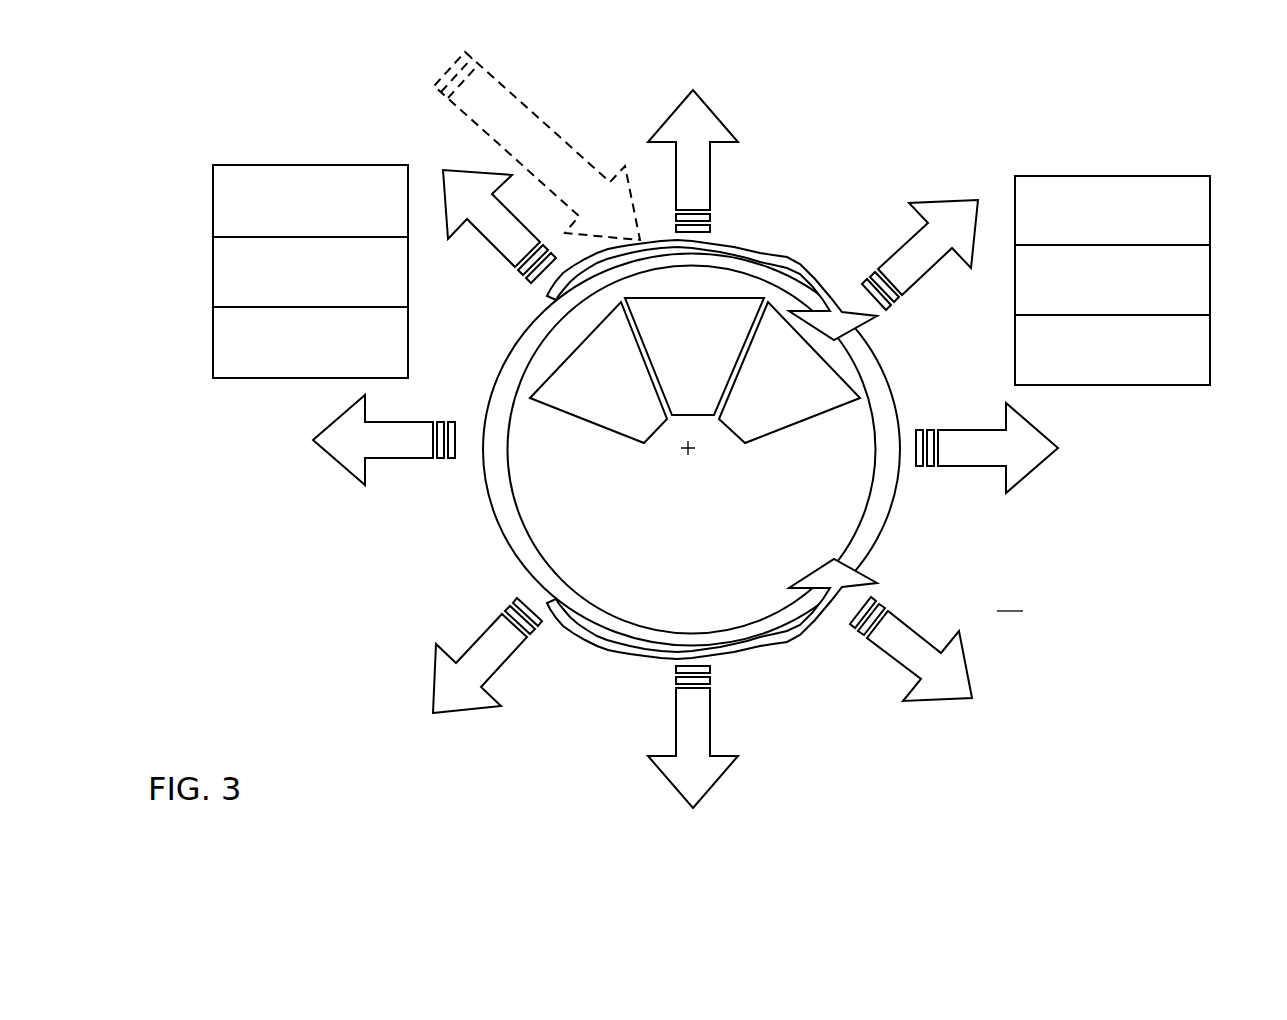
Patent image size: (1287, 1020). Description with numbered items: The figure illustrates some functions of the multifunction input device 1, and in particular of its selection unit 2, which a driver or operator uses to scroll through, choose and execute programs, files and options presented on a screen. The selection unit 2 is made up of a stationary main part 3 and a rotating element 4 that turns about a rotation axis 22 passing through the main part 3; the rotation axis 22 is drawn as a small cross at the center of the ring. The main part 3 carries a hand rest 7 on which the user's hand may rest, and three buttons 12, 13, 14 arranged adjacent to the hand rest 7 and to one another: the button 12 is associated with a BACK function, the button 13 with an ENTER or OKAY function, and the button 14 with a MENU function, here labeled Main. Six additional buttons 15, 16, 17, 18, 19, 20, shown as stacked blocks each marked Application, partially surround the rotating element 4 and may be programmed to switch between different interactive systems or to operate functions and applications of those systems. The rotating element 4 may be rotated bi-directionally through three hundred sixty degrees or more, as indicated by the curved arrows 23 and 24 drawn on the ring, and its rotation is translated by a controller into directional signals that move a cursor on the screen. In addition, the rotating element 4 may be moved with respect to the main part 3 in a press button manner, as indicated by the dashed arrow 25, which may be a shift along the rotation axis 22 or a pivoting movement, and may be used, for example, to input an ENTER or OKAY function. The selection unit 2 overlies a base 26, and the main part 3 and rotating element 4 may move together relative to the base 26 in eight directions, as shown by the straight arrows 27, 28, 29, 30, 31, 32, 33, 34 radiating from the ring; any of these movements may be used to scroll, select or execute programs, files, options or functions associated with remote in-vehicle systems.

The multifunction input device 1 is at (350, 622).
The selection unit 2 is at (424, 527).
The main part 3 is at (868, 430).
The rotating element 4 is at (893, 533).
The hand rest 7 is at (553, 548).
The button 12 is at (600, 414).
The button 13 is at (655, 420).
The button 14 is at (790, 420).
The additional button 15 is at (213, 186).
The additional button 16 is at (213, 256).
The additional button 17 is at (213, 326).
The additional button 18 is at (1210, 328).
The additional button 19 is at (1210, 258).
The additional button 20 is at (1210, 188).
The rotation axis 22 is at (706, 462).
The arrow 23 is at (815, 268).
The arrow 24 is at (802, 632).
The arrow 25 is at (538, 120).
The base 26 is at (1010, 599).
The arrow 27 is at (706, 118).
The arrow 28 is at (940, 208).
The arrow 29 is at (1030, 462).
The arrow 30 is at (962, 650).
The arrow 31 is at (710, 794).
The arrow 32 is at (455, 704).
The arrow 33 is at (335, 458).
The arrow 34 is at (462, 180).